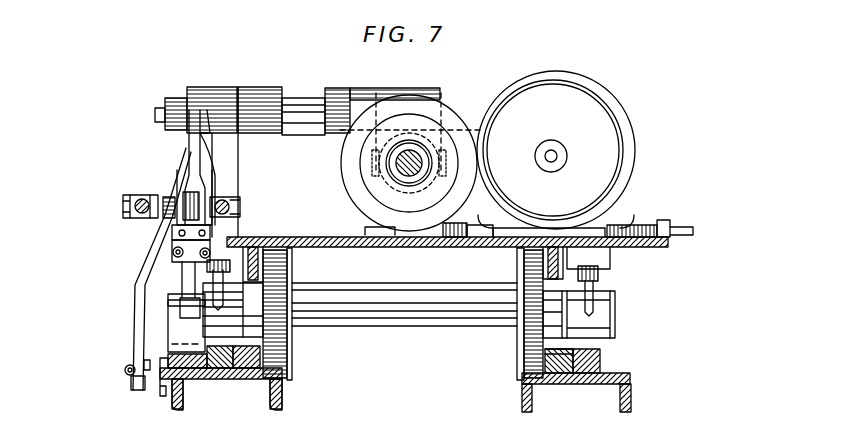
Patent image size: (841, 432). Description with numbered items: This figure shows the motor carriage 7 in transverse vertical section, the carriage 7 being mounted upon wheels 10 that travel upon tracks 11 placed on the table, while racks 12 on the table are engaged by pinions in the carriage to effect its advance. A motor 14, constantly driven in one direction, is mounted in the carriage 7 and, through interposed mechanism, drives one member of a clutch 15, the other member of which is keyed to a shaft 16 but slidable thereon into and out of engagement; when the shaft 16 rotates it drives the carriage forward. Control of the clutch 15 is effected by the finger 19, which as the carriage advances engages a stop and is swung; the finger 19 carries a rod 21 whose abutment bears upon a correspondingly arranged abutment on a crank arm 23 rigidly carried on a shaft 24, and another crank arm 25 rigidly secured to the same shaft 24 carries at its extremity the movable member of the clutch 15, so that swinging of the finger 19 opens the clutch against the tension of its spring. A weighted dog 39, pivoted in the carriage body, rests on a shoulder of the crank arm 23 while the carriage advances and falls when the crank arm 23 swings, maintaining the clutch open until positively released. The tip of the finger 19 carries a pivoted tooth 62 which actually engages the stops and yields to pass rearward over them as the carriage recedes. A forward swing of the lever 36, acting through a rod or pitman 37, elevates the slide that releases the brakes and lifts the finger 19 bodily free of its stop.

The carriage 7 is at (650, 247).
The wheels 10 is at (292, 347).
The tracks 11 is at (283, 395).
The racks 12 is at (239, 381).
The motor 14 is at (620, 127).
The clutch 15 is at (407, 100).
The shaft 16 is at (417, 158).
The finger 19 is at (190, 143).
The rod 21 is at (234, 197).
The crank arm 23 is at (206, 162).
The shaft 24 is at (308, 106).
The crank arm 25 is at (450, 140).
The lever 36 is at (135, 356).
The rod or pitman 37 is at (142, 199).
The dog 39 is at (188, 256).
The tooth 62 is at (180, 331).